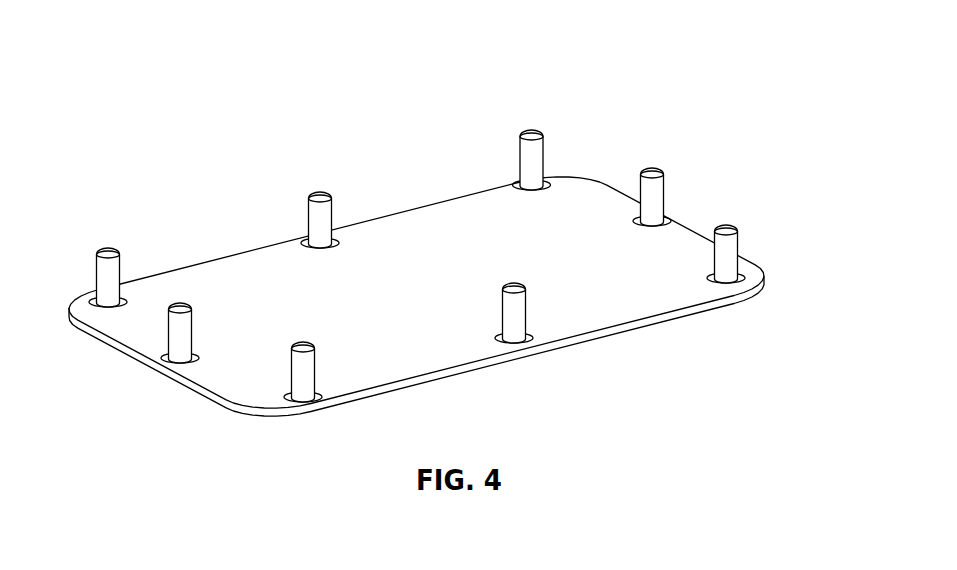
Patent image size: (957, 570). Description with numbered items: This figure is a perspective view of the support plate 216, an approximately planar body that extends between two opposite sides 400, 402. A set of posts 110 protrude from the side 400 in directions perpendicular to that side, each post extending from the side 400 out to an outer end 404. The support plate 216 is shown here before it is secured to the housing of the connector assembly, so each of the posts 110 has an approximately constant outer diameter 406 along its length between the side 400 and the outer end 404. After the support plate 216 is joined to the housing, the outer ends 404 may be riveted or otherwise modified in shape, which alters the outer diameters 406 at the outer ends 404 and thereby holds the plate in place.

The posts 110 is at (740, 238).
The support plate 216 is at (416, 263).
The side 400 is at (630, 302).
The side 402 is at (612, 337).
The outer ends 404 is at (322, 190).
The outer diameter 406 is at (583, 70).